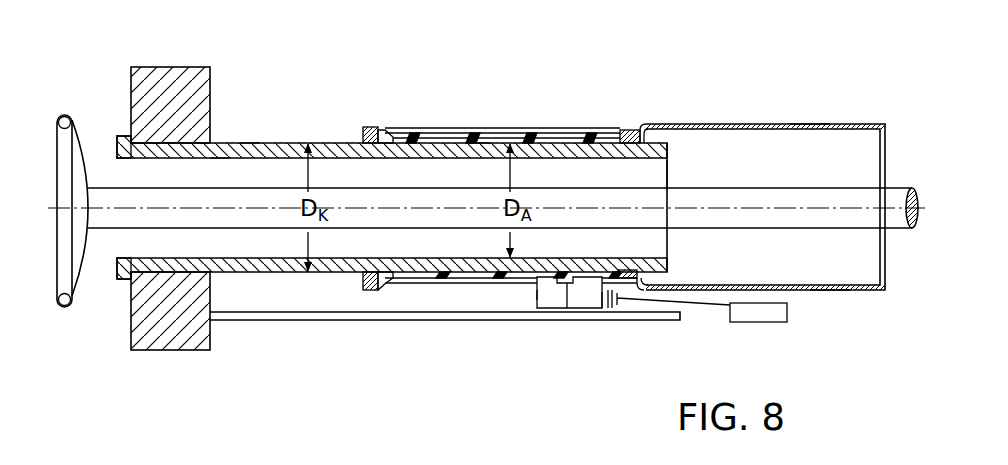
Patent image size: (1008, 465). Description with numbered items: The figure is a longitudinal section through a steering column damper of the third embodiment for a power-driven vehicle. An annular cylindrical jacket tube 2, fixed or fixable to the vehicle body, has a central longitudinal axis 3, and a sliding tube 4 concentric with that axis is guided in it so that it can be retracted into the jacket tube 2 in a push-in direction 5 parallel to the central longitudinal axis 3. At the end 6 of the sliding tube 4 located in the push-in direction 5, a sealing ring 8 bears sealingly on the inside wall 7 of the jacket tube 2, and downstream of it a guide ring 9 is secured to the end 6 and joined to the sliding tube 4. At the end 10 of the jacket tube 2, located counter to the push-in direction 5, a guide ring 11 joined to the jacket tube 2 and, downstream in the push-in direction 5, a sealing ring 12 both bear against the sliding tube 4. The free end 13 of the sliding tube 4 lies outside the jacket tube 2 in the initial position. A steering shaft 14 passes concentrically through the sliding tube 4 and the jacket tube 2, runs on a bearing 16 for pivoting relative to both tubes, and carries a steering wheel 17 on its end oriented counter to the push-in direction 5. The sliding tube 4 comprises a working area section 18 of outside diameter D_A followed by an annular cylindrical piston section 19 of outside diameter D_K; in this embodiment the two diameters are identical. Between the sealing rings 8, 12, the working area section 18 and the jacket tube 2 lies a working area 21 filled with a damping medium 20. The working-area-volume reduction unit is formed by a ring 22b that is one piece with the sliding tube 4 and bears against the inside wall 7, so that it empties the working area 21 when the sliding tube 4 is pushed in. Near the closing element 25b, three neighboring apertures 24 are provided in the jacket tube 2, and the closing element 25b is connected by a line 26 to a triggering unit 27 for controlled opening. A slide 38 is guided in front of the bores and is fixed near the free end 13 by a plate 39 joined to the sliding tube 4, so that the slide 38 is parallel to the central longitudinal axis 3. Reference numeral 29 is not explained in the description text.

The jacket tube 2 is at (760, 123).
The central longitudinal axis 3 is at (753, 207).
The sliding tube 4 is at (280, 149).
The push-in direction 5 is at (608, 50).
The end of the sliding tube 6 is at (668, 173).
The inside wall of the jacket tube 7 is at (809, 130).
The sealing ring 8 is at (618, 128).
The guide ring 9 is at (641, 126).
The end of the jacket tube 10 is at (368, 127).
The guide ring 11 is at (363, 291).
The sealing ring 12 is at (374, 289).
The free end of the sliding tube 13 is at (124, 139).
The steering shaft 14 is at (228, 195).
The bearing 16 is at (502, 114).
The steering wheel 17 is at (64, 310).
The working area section 18 is at (481, 152).
The piston section 19 is at (250, 150).
The damping medium 20 is at (431, 128).
The working area 21 is at (543, 131).
The ring 22b is at (382, 140).
The aperture 24 is at (567, 285).
The closing element 25b is at (534, 293).
The line 26 is at (705, 313).
The triggering unit 27 is at (768, 322).
The outer wall of outer tube 29 is at (832, 292).
The slide 38 is at (317, 319).
The plate 39 is at (168, 327).